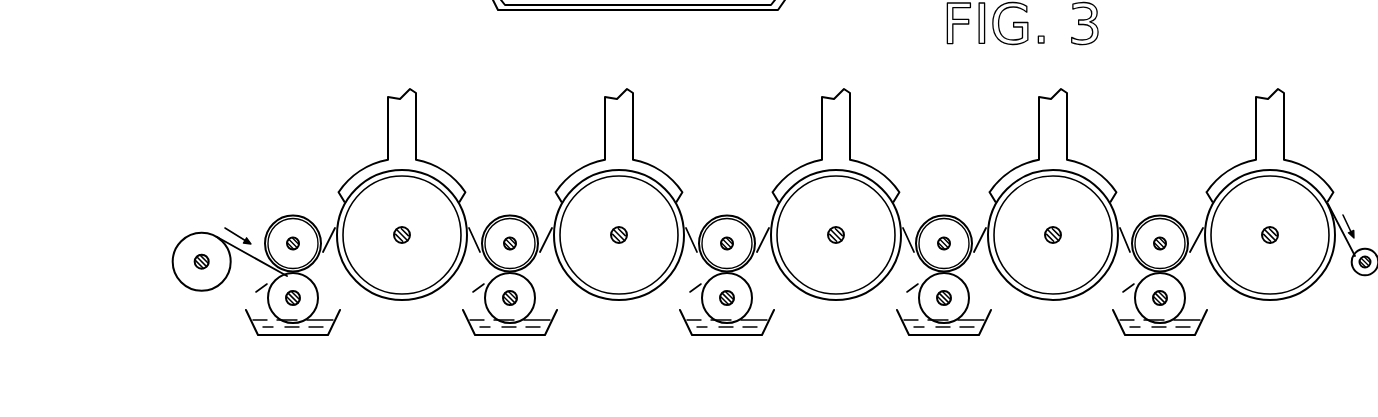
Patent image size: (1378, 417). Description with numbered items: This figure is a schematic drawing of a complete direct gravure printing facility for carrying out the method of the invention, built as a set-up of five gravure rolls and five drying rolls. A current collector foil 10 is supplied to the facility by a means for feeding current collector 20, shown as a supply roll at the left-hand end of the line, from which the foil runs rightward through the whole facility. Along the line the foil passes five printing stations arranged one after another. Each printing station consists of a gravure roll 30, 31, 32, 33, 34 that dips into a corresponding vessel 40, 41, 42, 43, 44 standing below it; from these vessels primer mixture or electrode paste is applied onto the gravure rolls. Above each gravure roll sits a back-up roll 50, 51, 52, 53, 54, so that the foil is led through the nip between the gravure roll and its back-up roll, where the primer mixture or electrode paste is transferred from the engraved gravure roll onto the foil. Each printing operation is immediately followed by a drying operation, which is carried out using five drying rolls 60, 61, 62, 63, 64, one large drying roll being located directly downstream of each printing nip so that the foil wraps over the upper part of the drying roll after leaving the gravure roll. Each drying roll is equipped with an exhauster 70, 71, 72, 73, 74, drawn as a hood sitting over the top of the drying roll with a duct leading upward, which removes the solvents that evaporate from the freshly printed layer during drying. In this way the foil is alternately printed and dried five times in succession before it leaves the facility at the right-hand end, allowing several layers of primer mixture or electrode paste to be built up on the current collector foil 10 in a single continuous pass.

The current collector foil 10 is at (266, 260).
The means for feeding current collector 20 is at (205, 296).
The gravure roll 30 is at (316, 297).
The gravure roll 31 is at (535, 297).
The gravure roll 32 is at (752, 297).
The gravure roll 33 is at (969, 297).
The gravure roll 34 is at (1185, 297).
The vessel 40 is at (280, 335).
The vessel 41 is at (518, 336).
The vessel 42 is at (729, 336).
The vessel 43 is at (947, 336).
The vessel 44 is at (1160, 336).
The back-up roll 50 is at (294, 225).
The back-up roll 51 is at (507, 223).
The back-up roll 52 is at (727, 223).
The back-up roll 53 is at (938, 226).
The back-up roll 54 is at (1160, 223).
The drying roll 60 is at (420, 282).
The drying roll 61 is at (637, 282).
The drying roll 62 is at (857, 277).
The drying roll 63 is at (1073, 277).
The drying roll 64 is at (1310, 265).
The exhauster 70 is at (392, 119).
The exhauster 71 is at (614, 127).
The exhauster 72 is at (828, 118).
The exhauster 73 is at (1058, 127).
The exhauster 74 is at (1273, 120).